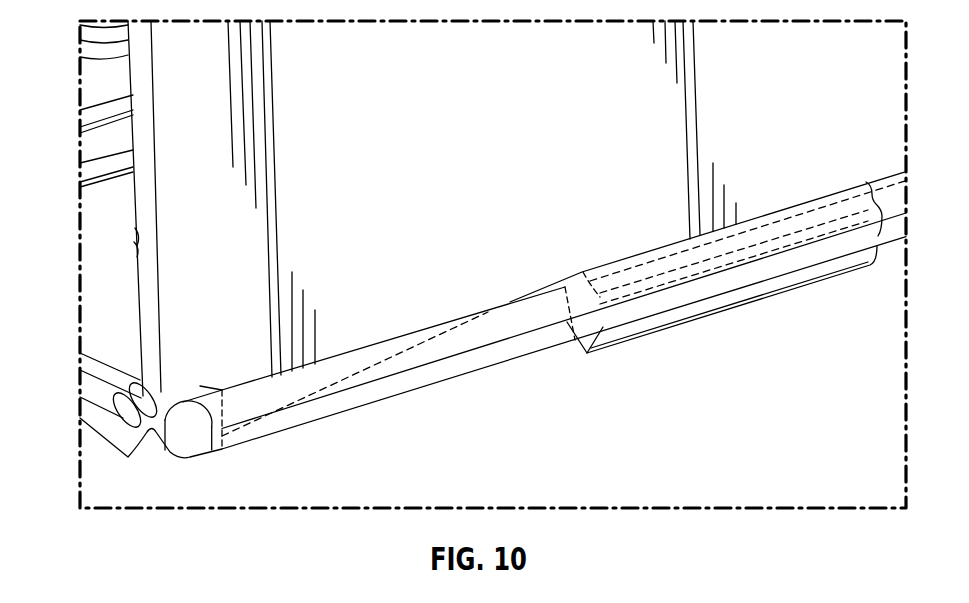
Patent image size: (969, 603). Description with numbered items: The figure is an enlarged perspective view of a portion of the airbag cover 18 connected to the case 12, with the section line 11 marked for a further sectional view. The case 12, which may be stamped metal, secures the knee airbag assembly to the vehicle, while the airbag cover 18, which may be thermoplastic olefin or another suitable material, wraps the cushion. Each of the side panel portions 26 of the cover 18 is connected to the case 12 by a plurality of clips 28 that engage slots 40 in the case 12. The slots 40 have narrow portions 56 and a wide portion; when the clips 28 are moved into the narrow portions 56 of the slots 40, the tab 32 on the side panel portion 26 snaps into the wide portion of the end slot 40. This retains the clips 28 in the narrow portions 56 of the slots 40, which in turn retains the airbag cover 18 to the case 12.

The section line for FIG. 11 is at (215, 437).
The case 12 is at (460, 374).
The airbag cover 18 is at (135, 205).
The side panel portions 26 is at (137, 257).
The clips 28 is at (713, 310).
The tab 32 is at (267, 416).
The slots 40 is at (375, 341).
The narrow portions 56 is at (800, 205).